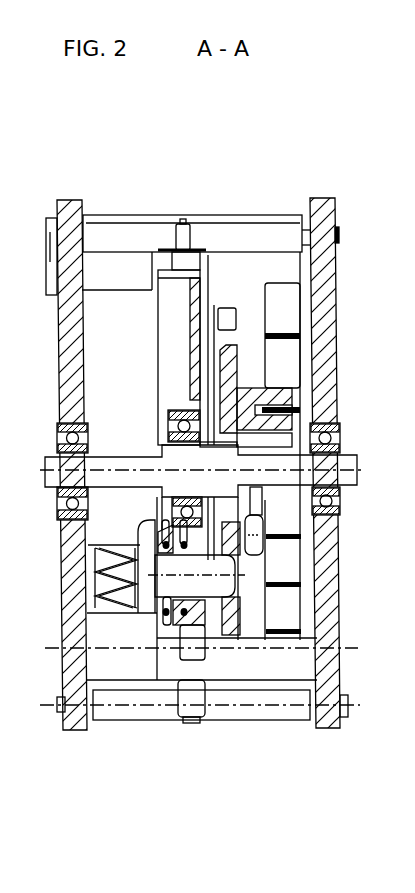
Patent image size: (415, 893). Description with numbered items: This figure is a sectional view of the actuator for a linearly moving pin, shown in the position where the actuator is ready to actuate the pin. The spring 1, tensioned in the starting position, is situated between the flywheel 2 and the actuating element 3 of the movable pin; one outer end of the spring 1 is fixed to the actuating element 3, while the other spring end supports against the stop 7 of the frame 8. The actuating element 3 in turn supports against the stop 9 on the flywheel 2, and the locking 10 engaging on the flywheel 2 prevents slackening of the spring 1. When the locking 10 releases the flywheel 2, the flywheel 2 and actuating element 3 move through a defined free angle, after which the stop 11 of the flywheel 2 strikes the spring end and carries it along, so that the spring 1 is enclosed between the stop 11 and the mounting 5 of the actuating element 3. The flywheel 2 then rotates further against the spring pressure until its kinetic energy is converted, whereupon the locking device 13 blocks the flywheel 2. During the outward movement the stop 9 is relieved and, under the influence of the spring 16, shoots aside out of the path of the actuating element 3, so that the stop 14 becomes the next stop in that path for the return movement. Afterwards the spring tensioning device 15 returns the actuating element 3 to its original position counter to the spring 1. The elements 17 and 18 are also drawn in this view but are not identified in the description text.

The spring 1 is at (288, 315).
The flywheel 2 is at (195, 300).
The actuating element 3 is at (230, 363).
The mounting 5 is at (278, 400).
The stop 7 is at (285, 660).
The frame 8 is at (327, 677).
The stop 9 is at (218, 587).
The locking 10 is at (178, 224).
The stop 11 is at (252, 575).
The locking device 13 is at (190, 718).
The stop 14 is at (212, 543).
The spring tensioning device 15 is at (255, 500).
The spring 16 is at (167, 625).
The spring 17 is at (120, 600).
The sleeve 18 is at (253, 532).